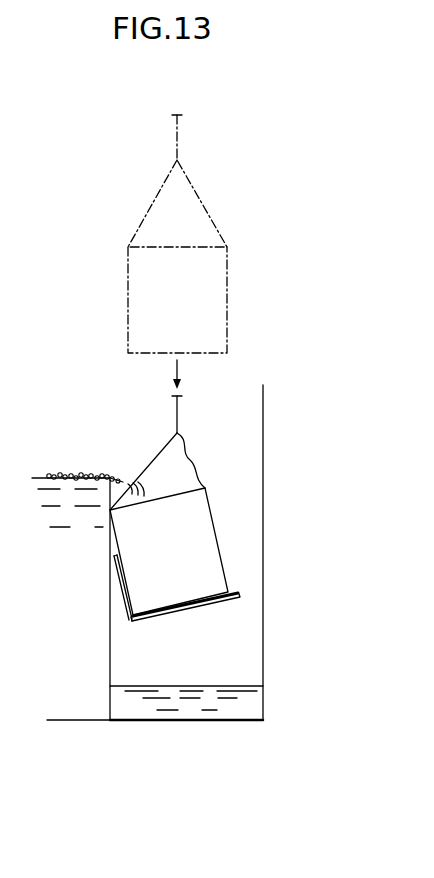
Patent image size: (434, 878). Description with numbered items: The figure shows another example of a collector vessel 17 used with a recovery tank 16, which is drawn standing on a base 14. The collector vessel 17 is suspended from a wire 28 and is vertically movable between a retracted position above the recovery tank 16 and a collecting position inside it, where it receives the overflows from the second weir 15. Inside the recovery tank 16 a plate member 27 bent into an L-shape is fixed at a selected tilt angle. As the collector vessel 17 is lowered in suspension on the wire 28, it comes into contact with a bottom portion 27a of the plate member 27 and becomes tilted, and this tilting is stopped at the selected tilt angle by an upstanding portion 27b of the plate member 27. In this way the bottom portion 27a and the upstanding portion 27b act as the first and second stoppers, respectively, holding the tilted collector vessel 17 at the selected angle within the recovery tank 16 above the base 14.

The base 14 is at (81, 684).
The second weir 15 is at (108, 492).
The recovery tank 16 is at (244, 660).
The collector vessel 17 is at (227, 297).
The plate member 27 is at (178, 688).
The bottom portion 27a is at (181, 613).
The upstanding portion 27b is at (128, 602).
The wire 28 is at (177, 147).